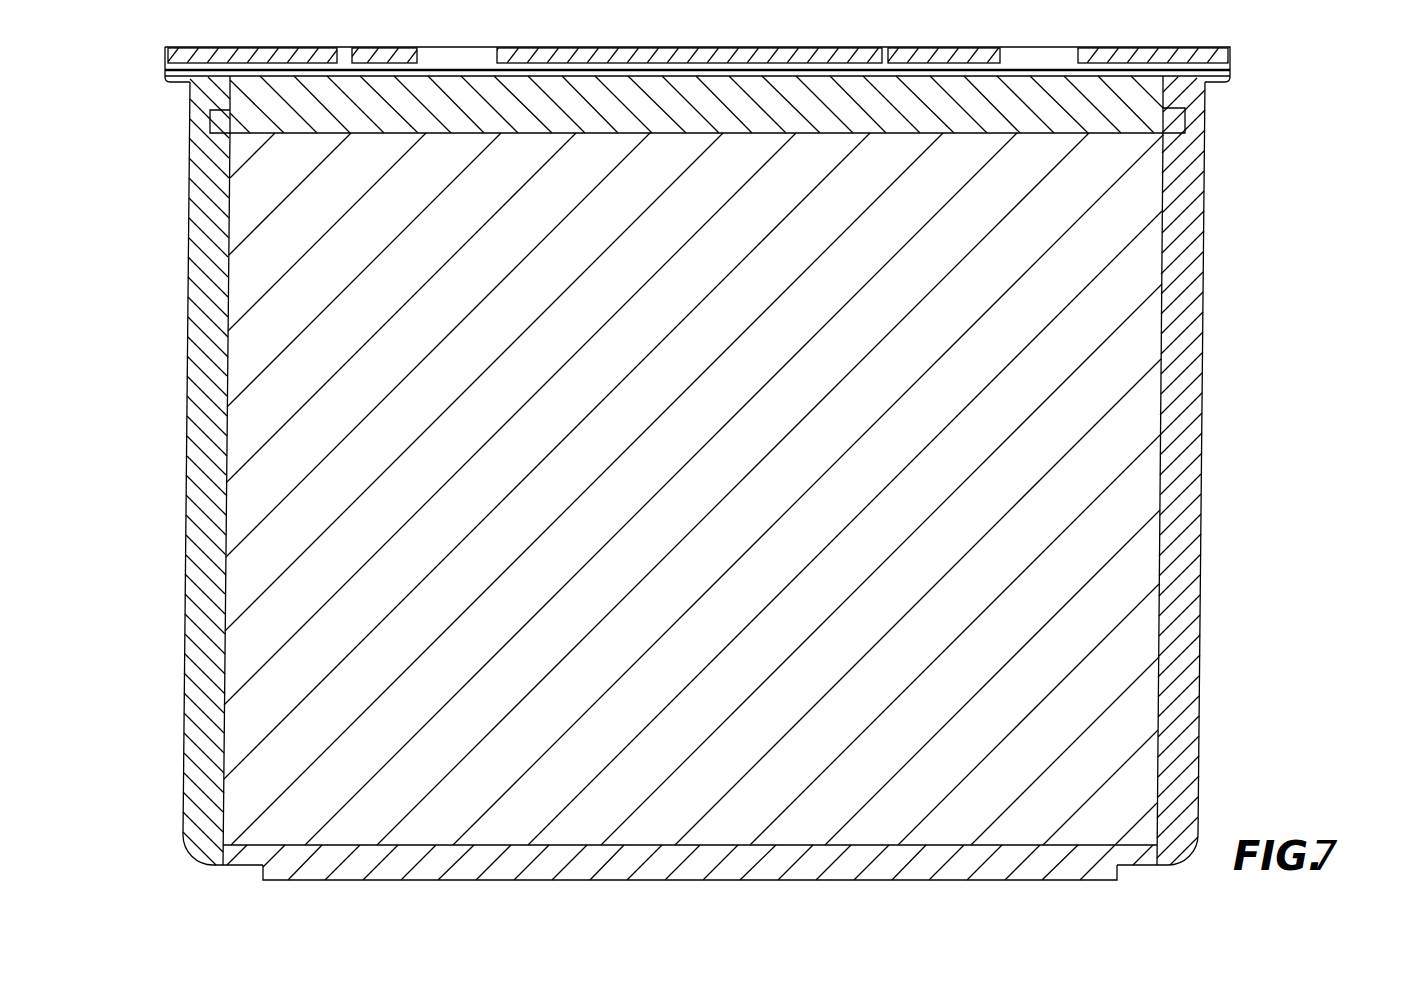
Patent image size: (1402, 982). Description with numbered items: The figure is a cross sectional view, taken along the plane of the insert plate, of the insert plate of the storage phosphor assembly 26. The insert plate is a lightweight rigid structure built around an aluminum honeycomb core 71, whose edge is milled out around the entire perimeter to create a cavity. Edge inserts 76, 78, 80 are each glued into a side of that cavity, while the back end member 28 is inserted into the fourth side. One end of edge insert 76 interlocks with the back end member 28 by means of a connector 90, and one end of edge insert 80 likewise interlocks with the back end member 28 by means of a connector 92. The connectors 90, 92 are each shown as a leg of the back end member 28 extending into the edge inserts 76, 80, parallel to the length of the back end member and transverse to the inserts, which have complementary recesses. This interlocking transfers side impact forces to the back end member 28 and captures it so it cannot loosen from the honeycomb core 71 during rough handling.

The storage phosphor assembly 26 is at (1262, 294).
The back end member 28 is at (165, 50).
The aluminum honeycomb core 71 is at (1140, 510).
The edge insert 76 is at (195, 553).
The edge insert 78 is at (1030, 868).
The edge insert 80 is at (1185, 765).
The connector 90 is at (212, 118).
The connector 92 is at (1186, 118).